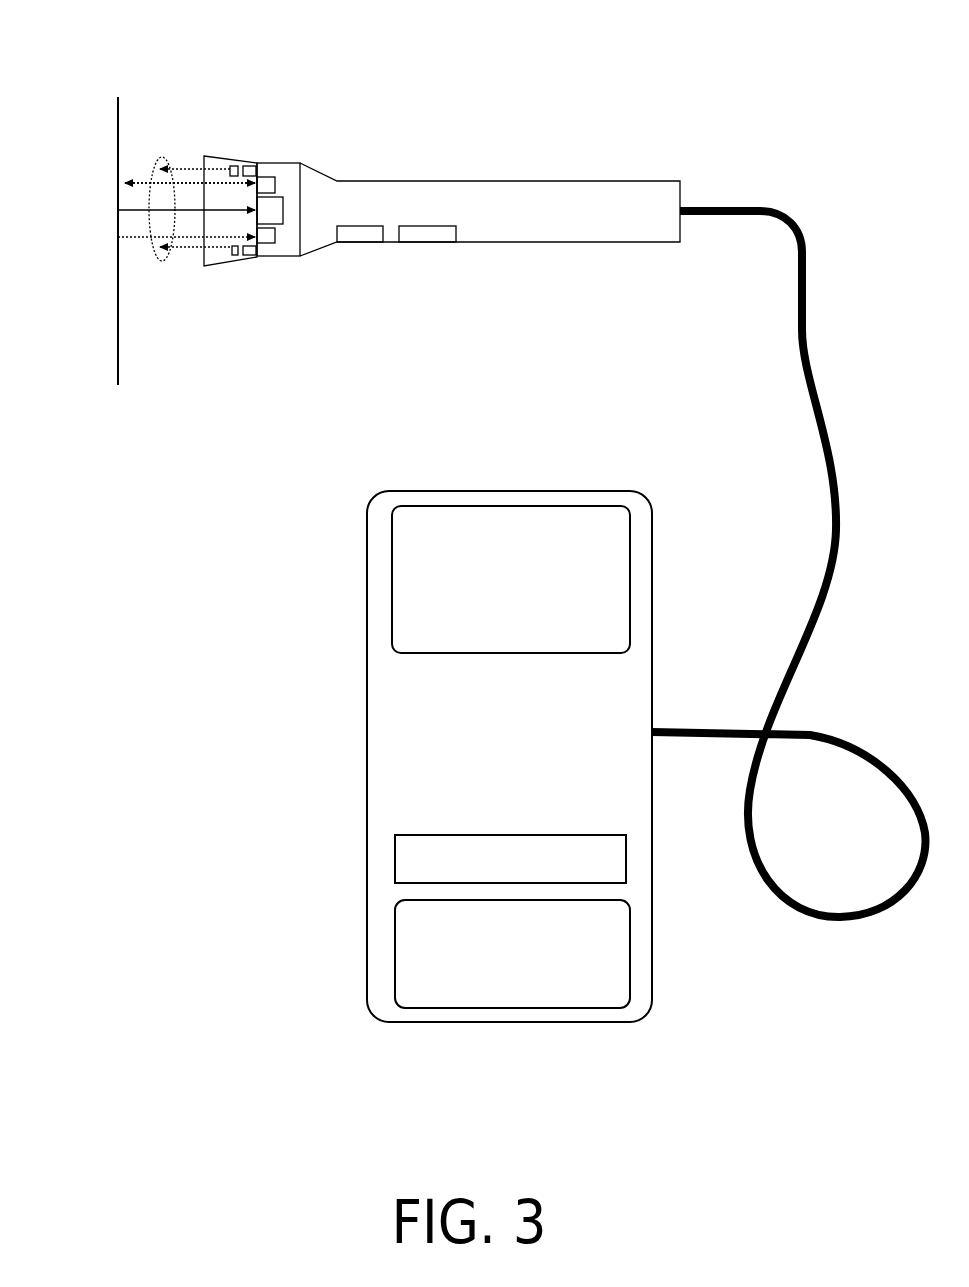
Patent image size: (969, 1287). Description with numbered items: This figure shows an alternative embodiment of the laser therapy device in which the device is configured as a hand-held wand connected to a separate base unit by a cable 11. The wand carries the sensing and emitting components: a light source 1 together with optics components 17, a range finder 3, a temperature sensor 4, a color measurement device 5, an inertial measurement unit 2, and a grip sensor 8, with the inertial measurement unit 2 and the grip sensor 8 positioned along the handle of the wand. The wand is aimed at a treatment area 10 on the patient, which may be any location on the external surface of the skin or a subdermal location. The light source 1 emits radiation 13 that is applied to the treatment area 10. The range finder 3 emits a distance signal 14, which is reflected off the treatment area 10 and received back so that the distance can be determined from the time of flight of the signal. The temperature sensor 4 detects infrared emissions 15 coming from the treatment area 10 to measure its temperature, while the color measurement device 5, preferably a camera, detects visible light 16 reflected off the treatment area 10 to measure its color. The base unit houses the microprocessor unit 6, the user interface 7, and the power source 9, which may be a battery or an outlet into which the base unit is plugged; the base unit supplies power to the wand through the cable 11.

The light source 1 is at (255, 145).
The inertial measurement unit 2 is at (362, 244).
The range finder 3 is at (288, 102).
The temperature sensor 4 is at (294, 144).
The color measurement device 5 is at (245, 291).
The microprocessor unit 6 is at (557, 878).
The user interface 7 is at (521, 731).
The grip sensor 8 is at (440, 244).
The power source 9 is at (570, 954).
The treatment area 10 is at (65, 223).
The cable 11 is at (788, 564).
The radiation 13 is at (140, 152).
The distance signal 14 is at (163, 152).
The infrared emissions 15 is at (160, 233).
The visible light 16 is at (165, 272).
The optics components 17 is at (209, 157).